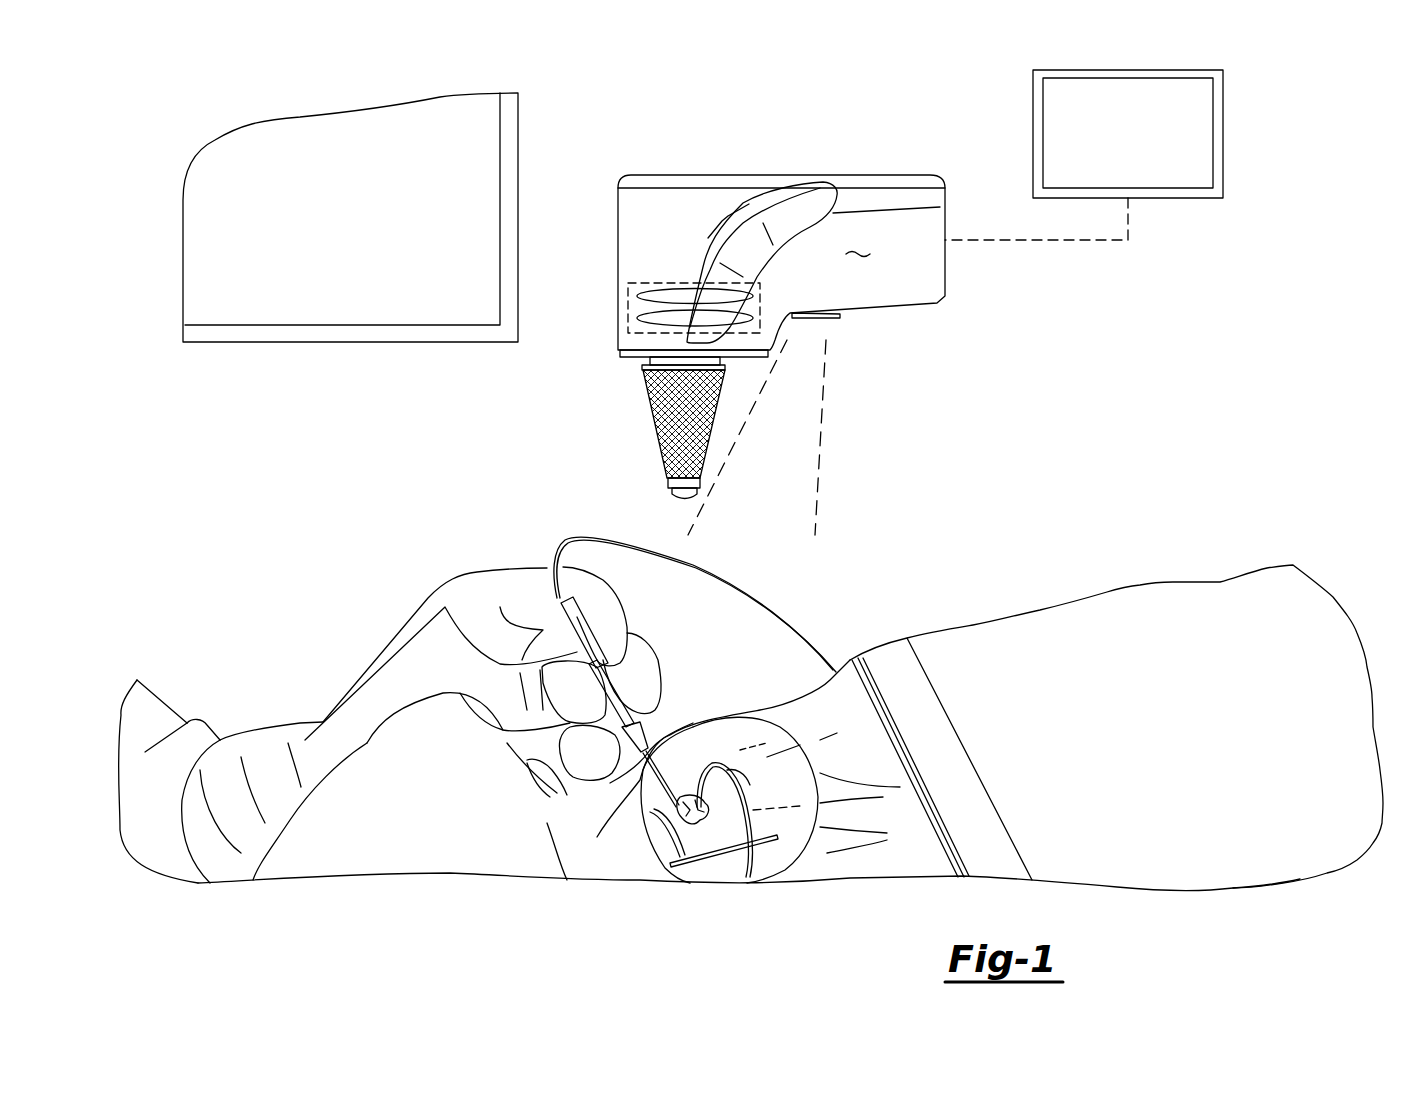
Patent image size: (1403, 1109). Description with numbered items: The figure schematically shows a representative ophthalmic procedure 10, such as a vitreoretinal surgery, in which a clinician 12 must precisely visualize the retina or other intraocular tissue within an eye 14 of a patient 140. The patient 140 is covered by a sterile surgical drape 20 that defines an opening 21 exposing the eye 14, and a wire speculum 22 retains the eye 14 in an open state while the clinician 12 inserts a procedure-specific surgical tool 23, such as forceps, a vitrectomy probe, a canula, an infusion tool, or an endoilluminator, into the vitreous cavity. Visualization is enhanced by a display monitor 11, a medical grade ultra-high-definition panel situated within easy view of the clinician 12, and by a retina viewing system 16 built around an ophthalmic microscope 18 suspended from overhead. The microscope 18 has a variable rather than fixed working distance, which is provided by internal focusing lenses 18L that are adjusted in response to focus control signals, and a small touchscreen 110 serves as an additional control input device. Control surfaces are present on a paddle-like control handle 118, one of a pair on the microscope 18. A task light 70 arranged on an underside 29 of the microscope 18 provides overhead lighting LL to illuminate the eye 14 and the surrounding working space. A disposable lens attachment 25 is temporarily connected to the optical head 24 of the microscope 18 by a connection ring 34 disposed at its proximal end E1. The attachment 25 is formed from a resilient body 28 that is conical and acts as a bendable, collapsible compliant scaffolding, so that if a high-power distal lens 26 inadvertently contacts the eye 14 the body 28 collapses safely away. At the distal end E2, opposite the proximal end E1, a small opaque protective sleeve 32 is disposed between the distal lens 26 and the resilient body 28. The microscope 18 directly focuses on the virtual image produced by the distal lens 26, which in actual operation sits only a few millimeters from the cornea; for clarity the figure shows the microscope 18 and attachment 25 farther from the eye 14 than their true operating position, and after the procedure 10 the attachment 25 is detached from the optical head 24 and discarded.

The ophthalmic procedure 10 is at (1240, 287).
The display monitor 11 is at (470, 128).
The clinician 12 is at (229, 660).
The eye 14 is at (697, 842).
The retina viewing system 16 is at (787, 324).
The ophthalmic microscope 18 is at (781, 266).
The internal focusing lenses 18L is at (628, 298).
The sterile surgical drape 20 is at (847, 680).
The opening 21 is at (683, 830).
The wire speculum 22 is at (750, 863).
The surgical tool 23 is at (567, 608).
The optical head 24 is at (662, 437).
The disposable lens attachment 25 is at (748, 452).
The distal lens 26 is at (662, 490).
The resilient body 28 is at (648, 410).
The underside 29 is at (933, 304).
The protective sleeve 32 is at (702, 483).
The connection ring 34 is at (727, 368).
The task light 70 is at (840, 316).
The touchscreen 110 is at (1224, 132).
The control handle 118 is at (810, 213).
The patient 140 is at (990, 696).
The proximal end E1 is at (610, 368).
The distal end E2 is at (662, 505).
The overhead lighting LL is at (818, 527).